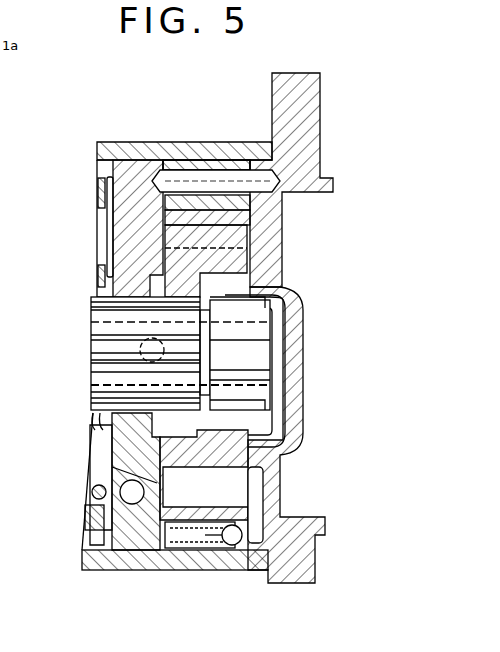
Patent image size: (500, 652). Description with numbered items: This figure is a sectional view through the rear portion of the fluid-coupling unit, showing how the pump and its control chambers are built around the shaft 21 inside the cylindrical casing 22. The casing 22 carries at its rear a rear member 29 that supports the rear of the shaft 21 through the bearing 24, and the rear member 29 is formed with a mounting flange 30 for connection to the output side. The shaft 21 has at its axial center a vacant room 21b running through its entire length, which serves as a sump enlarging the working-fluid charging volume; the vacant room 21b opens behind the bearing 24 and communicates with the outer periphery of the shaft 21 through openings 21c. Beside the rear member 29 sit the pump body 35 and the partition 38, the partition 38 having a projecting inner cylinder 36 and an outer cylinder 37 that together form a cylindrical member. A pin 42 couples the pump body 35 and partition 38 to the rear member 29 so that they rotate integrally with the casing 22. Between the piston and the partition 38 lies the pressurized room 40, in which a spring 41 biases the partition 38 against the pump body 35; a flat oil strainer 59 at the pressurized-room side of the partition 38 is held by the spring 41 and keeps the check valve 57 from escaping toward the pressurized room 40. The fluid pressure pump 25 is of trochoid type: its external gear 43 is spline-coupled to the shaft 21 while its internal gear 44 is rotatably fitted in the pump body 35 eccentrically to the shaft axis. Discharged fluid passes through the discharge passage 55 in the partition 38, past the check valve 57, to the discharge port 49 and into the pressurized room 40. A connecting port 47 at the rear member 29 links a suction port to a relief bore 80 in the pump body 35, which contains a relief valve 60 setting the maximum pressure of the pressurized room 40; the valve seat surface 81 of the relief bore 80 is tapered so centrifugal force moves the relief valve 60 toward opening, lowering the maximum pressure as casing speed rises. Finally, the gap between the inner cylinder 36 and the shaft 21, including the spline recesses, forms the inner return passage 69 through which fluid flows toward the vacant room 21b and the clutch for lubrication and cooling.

The cylindrical casing 22 is at (115, 142).
The partition 38 is at (137, 165).
The pin 42 is at (190, 178).
The pump body 35 is at (223, 158).
The mounting flange 30 is at (320, 92).
The outer cylinder 37 is at (100, 165).
The oil strainer 59 is at (100, 218).
The pressurized room 40 is at (100, 245).
The inner cylinder 36 is at (100, 290).
The openings 21c is at (142, 347).
The shaft 21 is at (100, 355).
The vacant room 21b is at (100, 386).
The inner return passage 69 is at (93, 418).
The spring 41 is at (93, 490).
The internal gear 44 is at (283, 213).
The fluid pressure pump 25 is at (253, 235).
The rear member 29 is at (282, 270).
The bearing 24 is at (270, 298).
The external gear 43 is at (252, 452).
The connecting port 47 is at (264, 487).
The check valve 57 is at (110, 545).
The discharge passage 55 is at (133, 525).
The discharge port 49 is at (148, 552).
The relief bore 80 is at (197, 535).
The relief valve 60 is at (225, 548).
The valve seat surface 81 is at (238, 546).